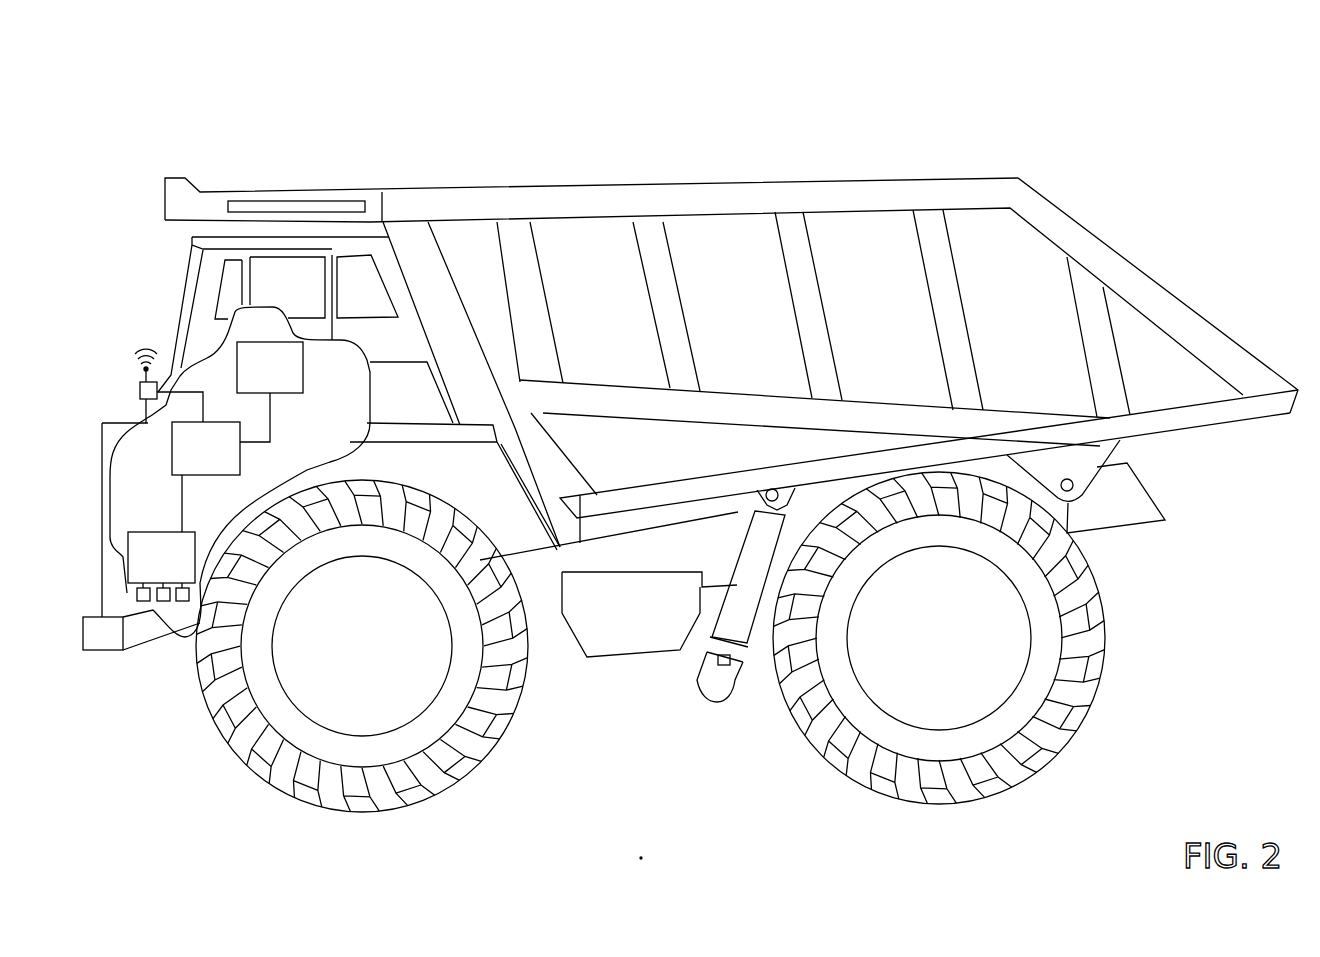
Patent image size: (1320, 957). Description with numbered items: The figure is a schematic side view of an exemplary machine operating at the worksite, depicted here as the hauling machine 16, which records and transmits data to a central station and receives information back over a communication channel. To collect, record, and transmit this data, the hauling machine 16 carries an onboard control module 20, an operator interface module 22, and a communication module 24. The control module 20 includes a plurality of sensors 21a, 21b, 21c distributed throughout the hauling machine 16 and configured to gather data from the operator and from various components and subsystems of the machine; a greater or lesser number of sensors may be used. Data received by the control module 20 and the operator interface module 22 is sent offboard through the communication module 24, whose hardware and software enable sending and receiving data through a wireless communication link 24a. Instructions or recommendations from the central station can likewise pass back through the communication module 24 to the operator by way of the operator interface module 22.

The hauling machine 16 is at (1207, 166).
The onboard control module 20 is at (161, 557).
The sensor 21a is at (137, 594).
The sensor 21b is at (168, 650).
The sensor 21c is at (212, 580).
The operator interface module 22 is at (270, 392).
The communication module 24 is at (198, 462).
The wireless communication link 24a is at (138, 388).